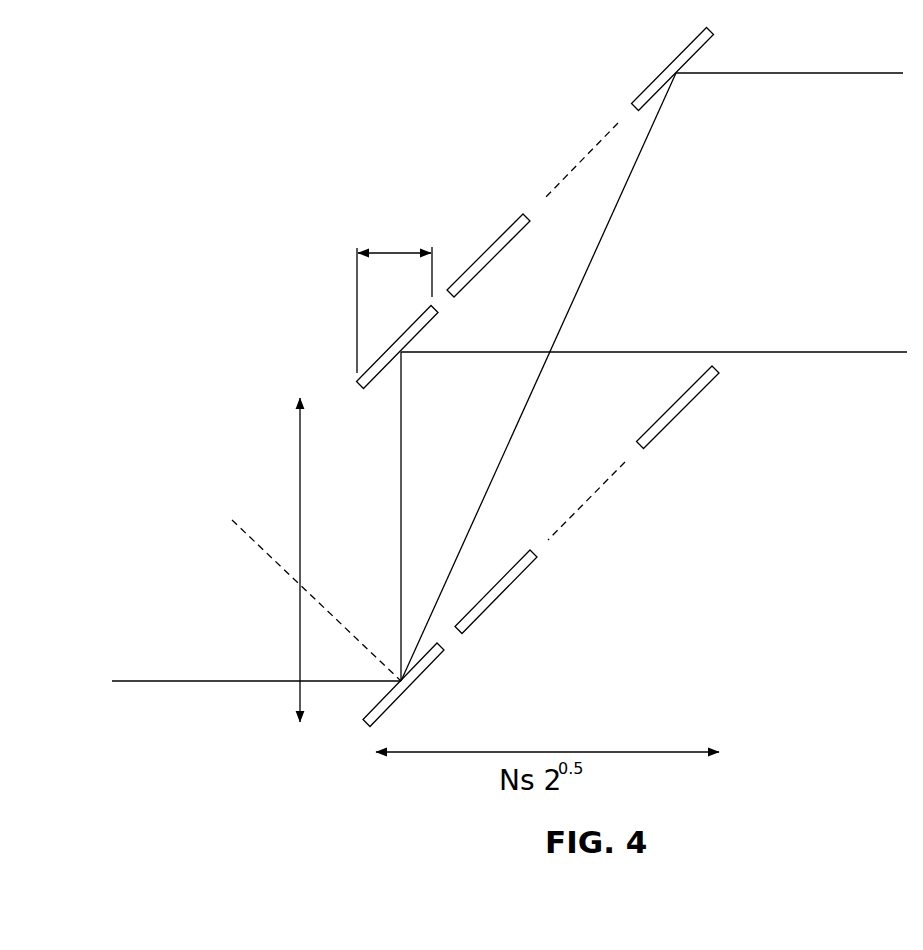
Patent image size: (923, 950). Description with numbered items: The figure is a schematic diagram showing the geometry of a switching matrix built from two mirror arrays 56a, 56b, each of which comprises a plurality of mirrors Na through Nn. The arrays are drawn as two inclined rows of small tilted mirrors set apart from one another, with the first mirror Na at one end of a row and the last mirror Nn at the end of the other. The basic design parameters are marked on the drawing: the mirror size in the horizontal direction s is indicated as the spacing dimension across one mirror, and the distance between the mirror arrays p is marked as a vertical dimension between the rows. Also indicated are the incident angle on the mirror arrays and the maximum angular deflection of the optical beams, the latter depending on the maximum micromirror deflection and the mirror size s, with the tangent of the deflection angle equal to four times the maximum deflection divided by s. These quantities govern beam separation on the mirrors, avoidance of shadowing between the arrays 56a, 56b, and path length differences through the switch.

The mirror array 56b is at (484, 178).
The mirror array 56a is at (590, 604).
The mirror Nn is at (700, 393).
The mirror Na is at (423, 673).
The mirror size in the horizontal direction s is at (391, 248).
The distance between the mirror arrays p is at (296, 452).